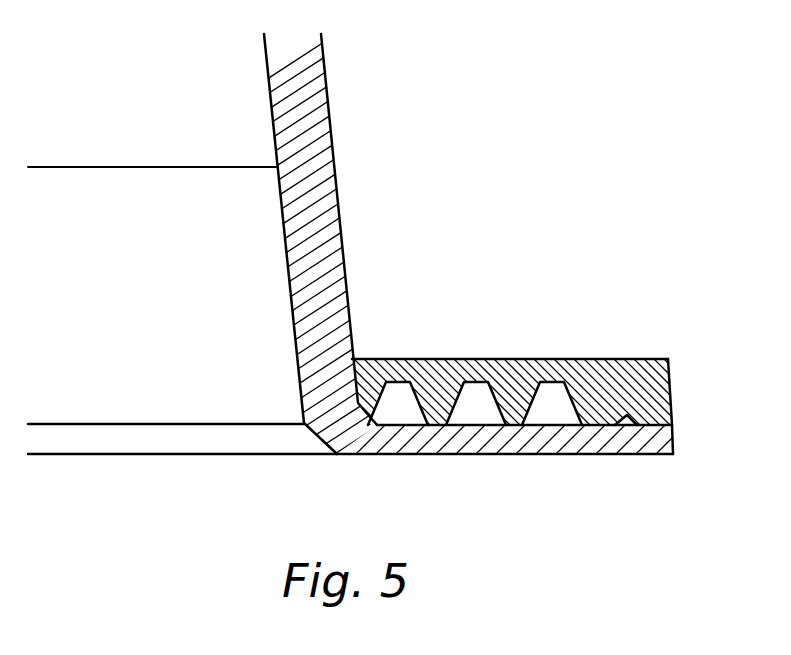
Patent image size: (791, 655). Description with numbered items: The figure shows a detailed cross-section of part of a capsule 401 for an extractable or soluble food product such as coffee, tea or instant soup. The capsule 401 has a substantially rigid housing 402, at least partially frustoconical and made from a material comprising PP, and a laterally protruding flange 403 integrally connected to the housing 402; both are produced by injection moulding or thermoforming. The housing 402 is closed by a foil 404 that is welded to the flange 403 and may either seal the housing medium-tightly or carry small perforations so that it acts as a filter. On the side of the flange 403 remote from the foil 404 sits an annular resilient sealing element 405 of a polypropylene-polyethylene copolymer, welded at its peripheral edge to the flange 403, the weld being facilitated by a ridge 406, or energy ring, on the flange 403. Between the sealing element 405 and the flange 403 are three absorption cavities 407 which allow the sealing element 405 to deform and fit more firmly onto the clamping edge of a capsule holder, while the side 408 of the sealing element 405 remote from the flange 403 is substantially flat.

The capsule 401 is at (368, 60).
The housing 402 is at (323, 197).
The flange 403 is at (492, 437).
The foil 404 is at (210, 455).
The annular resilient sealing element 405 is at (622, 380).
The ridge 406 is at (627, 426).
The absorption cavities 407 is at (397, 405).
The side of sealing element 408 is at (652, 357).